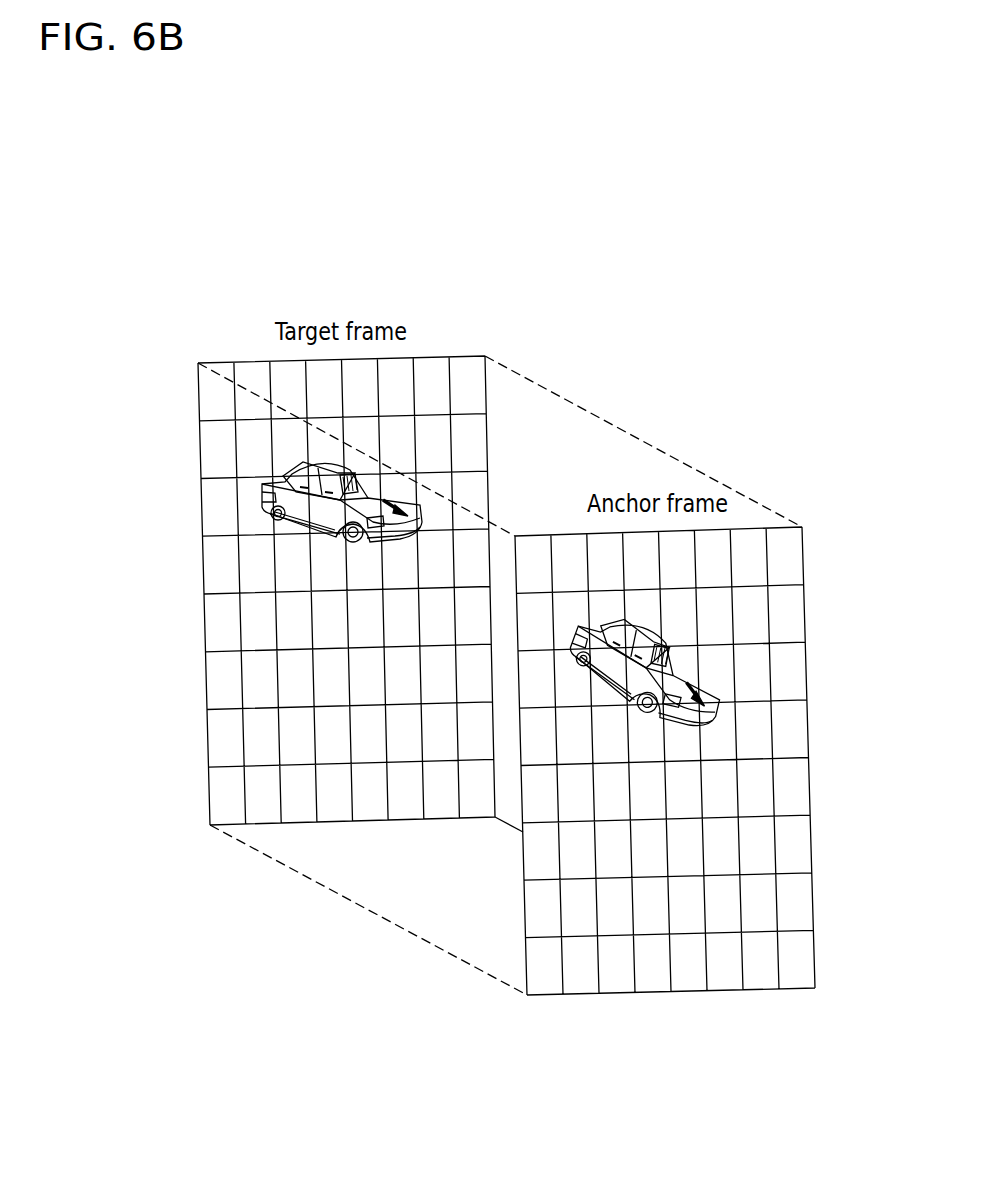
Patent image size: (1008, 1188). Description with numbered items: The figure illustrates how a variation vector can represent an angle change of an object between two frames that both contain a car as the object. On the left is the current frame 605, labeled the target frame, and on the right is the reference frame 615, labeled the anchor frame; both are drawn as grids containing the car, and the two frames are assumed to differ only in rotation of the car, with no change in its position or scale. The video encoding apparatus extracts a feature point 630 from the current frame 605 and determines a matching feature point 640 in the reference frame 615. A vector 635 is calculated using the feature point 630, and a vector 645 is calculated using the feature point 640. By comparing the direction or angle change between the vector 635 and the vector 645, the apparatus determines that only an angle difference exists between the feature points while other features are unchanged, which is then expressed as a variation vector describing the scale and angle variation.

The current frame 605 is at (428, 357).
The reference frame 615 is at (743, 528).
The feature point 630 is at (358, 484).
The vector 635 is at (385, 501).
The feature point 640 is at (672, 656).
The vector 645 is at (703, 691).